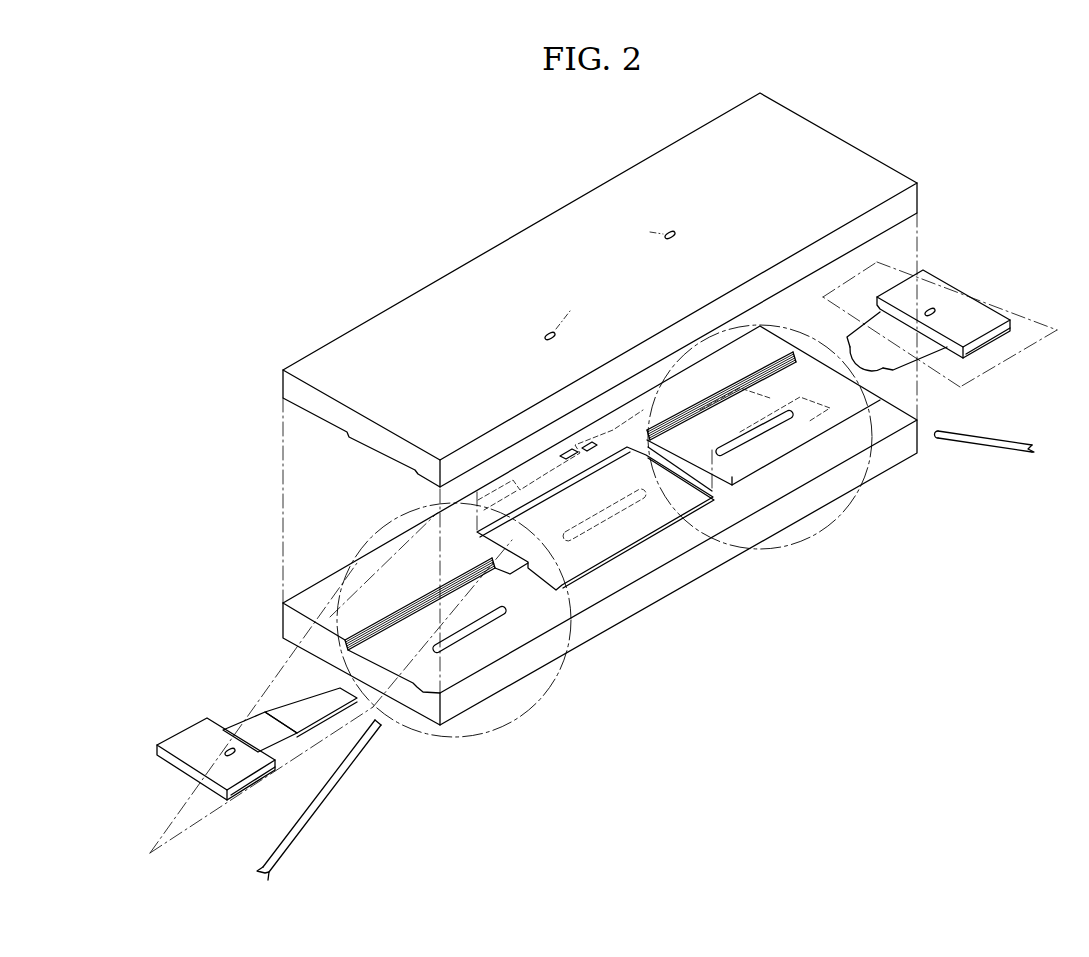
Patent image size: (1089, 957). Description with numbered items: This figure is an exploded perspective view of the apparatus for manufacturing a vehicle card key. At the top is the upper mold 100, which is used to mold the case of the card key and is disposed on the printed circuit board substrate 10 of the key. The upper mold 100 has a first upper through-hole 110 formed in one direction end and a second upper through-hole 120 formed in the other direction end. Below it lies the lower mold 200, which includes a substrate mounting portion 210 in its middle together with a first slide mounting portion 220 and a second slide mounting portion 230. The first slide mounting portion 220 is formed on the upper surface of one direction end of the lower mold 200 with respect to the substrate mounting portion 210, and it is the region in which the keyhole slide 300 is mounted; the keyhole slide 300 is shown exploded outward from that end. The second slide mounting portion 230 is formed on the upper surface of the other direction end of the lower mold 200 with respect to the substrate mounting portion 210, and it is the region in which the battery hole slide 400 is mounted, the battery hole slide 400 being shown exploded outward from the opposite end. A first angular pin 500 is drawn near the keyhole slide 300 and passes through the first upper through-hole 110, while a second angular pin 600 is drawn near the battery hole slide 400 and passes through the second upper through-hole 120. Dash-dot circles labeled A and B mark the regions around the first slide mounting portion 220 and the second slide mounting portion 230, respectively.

The printed circuit board substrate 10 is at (510, 463).
The upper mold 100 is at (435, 278).
The first upper through-hole 110 is at (549, 330).
The second upper through-hole 120 is at (667, 232).
The lower mold 200 is at (697, 592).
The substrate mounting portion 210 is at (612, 538).
The first slide mounting portion 220 is at (527, 608).
The second slide mounting portion 230 is at (753, 467).
The keyhole slide 300 is at (175, 725).
The battery hole slide 400 is at (948, 276).
The first angular pin 500 is at (335, 787).
The second angular pin 600 is at (985, 457).
The detail region A is at (505, 727).
The detail region B is at (863, 500).